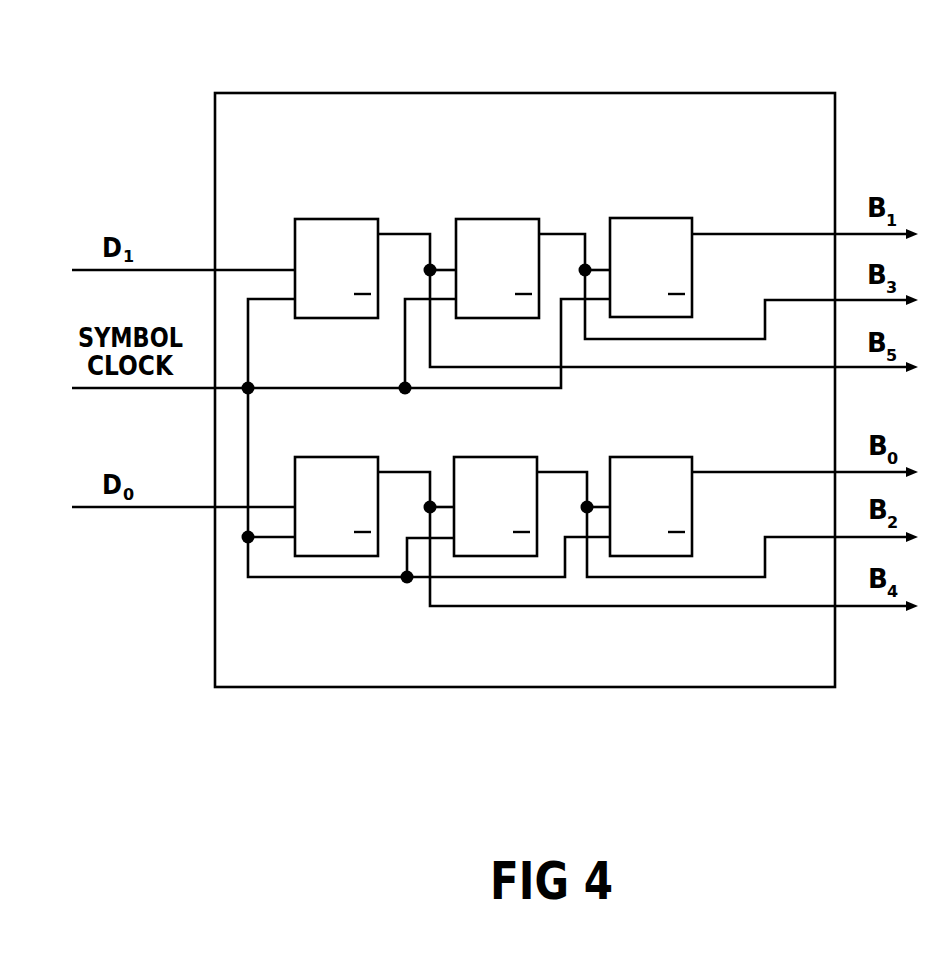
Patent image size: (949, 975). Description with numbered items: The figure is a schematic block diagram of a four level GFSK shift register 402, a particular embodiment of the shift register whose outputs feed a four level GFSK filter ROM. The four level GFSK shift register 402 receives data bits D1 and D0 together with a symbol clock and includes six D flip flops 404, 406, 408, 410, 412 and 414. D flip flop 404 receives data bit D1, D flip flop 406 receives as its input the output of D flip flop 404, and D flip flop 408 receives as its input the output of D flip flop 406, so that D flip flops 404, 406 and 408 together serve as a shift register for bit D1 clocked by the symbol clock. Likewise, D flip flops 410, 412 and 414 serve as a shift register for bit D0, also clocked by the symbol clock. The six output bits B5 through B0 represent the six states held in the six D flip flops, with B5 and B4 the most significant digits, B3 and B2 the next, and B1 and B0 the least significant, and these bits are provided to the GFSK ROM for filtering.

The 4 level GFSK shift register 402 is at (623, 92).
The D flip flop 404 is at (347, 216).
The D flip flop 406 is at (515, 217).
The D flip flop 408 is at (677, 214).
The D flip flop 410 is at (337, 455).
The D flip flop 412 is at (510, 455).
The D flip flop 414 is at (675, 455).